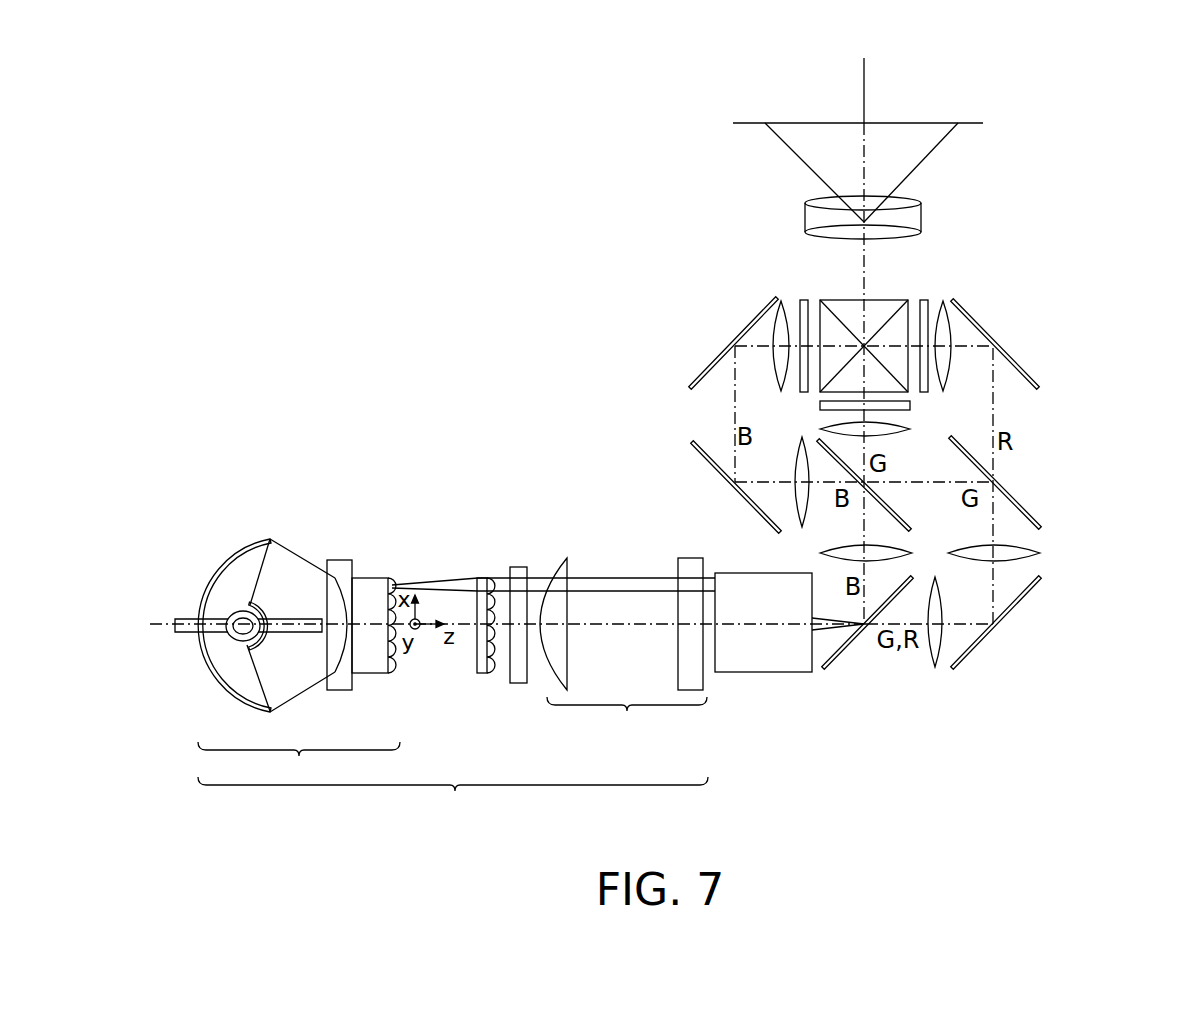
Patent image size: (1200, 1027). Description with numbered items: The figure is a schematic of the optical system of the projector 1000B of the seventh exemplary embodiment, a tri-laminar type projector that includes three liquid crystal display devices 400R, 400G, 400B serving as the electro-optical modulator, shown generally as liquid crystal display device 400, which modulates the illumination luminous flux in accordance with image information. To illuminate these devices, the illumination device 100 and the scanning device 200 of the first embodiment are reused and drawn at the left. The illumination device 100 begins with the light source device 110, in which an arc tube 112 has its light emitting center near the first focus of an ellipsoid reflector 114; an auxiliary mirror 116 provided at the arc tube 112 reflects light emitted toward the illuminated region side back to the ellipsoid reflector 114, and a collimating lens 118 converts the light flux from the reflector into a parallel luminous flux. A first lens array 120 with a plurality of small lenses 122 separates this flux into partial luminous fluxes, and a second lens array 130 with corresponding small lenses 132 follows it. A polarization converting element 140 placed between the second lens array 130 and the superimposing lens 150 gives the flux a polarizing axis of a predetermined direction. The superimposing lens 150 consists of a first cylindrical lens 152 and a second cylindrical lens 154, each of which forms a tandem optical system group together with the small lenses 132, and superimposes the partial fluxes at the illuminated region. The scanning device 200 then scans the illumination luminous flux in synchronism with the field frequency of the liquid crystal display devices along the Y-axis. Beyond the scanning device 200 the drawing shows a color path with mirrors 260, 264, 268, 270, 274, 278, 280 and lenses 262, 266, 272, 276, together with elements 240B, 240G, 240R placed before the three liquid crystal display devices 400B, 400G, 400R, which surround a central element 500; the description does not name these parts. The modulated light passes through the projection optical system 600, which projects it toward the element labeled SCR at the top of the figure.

The illumination device 100 is at (441, 661).
The light source device 110 is at (288, 663).
The arc tube 112 is at (273, 710).
The ellipsoid reflector 114 is at (225, 697).
The auxiliary mirror 116 is at (262, 648).
The collimating lens 118 is at (342, 690).
The first lens array 120 is at (402, 643).
The small lens 122 is at (388, 578).
The second lens array 130 is at (482, 643).
The small lens 132 is at (487, 578).
The polarization converting element 140 is at (515, 683).
The superimposing lens 150 is at (623, 622).
The first cylindrical lens 152 is at (557, 558).
The second cylindrical lens 154 is at (690, 558).
The scanning device 200 is at (763, 696).
The dichroic mirror 260 is at (843, 655).
The field lens 262 is at (918, 553).
The dichroic mirror 264 is at (893, 510).
The relay lens 266 is at (800, 533).
The reflecting mirror 268 is at (713, 467).
The reflecting mirror 270 is at (745, 327).
The relay lens 272 is at (935, 668).
The reflecting mirror 274 is at (1020, 603).
The relay lens 276 is at (1040, 553).
The reflecting mirror 278 is at (1013, 485).
The reflecting mirror 280 is at (1019, 363).
The field lens for blue light 240B is at (779, 373).
The field lens for green light 240G is at (820, 429).
The field lens for red light 240R is at (953, 372).
The liquid crystal display device 400 is at (990, 264).
The liquid crystal display device 400B is at (803, 300).
The liquid crystal display device 400G is at (911, 410).
The liquid crystal display device 400R is at (924, 300).
The cross dichroic prism 500 is at (905, 300).
The projection optical system 600 is at (921, 215).
The projector 1000B is at (1044, 127).
The screen SCR is at (752, 122).